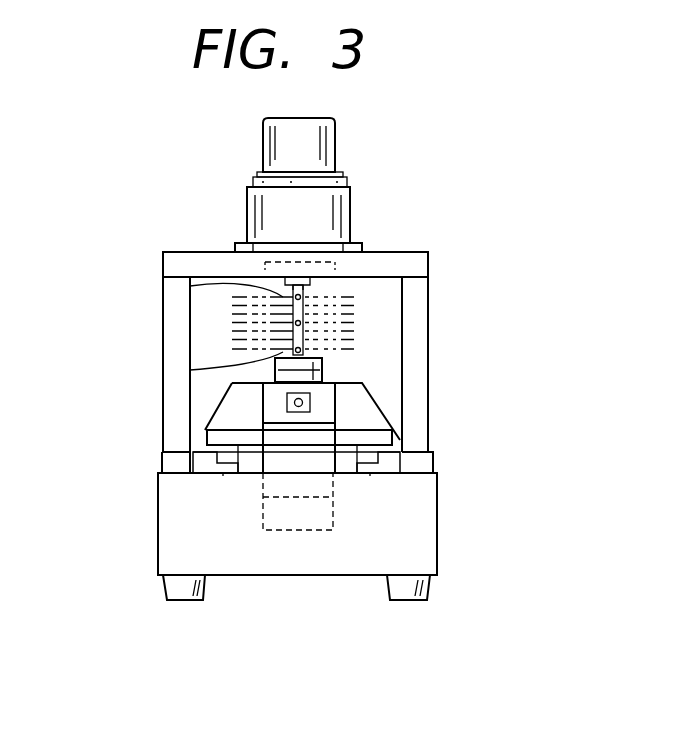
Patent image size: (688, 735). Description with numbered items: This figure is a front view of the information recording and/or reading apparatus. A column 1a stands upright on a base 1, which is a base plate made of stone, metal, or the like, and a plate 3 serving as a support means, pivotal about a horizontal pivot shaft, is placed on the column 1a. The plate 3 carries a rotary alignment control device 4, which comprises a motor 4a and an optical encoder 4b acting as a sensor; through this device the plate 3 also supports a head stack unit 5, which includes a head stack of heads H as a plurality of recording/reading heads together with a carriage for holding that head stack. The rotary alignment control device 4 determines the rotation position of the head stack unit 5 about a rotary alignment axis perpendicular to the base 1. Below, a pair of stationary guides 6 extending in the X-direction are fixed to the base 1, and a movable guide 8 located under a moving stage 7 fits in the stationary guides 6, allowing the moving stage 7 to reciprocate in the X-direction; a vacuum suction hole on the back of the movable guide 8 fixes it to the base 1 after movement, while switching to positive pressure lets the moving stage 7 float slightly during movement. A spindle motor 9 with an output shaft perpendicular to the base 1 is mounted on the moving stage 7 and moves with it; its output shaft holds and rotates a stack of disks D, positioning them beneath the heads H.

The base 1 is at (178, 547).
The column 1a is at (178, 268).
The plate 3 is at (240, 242).
The rotary alignment control device 4 is at (374, 168).
The motor 4a is at (322, 215).
The optical encoder 4b is at (308, 142).
The head stack unit 5 is at (290, 296).
The stationary guides 6 is at (200, 470).
The moving stage 7 is at (217, 440).
The movable guide 8 is at (223, 473).
The spindle motor 9 is at (296, 520).
The disks D is at (366, 293).
The heads H is at (190, 370).